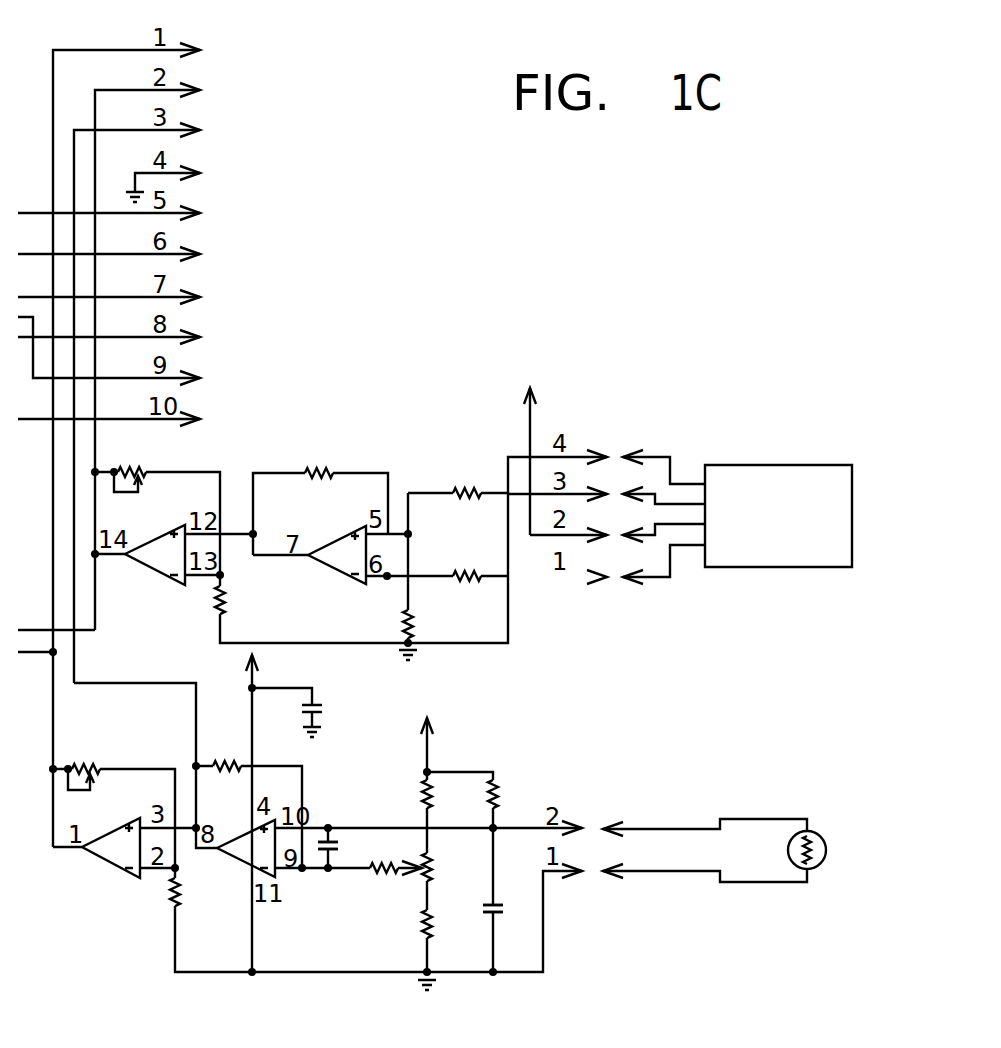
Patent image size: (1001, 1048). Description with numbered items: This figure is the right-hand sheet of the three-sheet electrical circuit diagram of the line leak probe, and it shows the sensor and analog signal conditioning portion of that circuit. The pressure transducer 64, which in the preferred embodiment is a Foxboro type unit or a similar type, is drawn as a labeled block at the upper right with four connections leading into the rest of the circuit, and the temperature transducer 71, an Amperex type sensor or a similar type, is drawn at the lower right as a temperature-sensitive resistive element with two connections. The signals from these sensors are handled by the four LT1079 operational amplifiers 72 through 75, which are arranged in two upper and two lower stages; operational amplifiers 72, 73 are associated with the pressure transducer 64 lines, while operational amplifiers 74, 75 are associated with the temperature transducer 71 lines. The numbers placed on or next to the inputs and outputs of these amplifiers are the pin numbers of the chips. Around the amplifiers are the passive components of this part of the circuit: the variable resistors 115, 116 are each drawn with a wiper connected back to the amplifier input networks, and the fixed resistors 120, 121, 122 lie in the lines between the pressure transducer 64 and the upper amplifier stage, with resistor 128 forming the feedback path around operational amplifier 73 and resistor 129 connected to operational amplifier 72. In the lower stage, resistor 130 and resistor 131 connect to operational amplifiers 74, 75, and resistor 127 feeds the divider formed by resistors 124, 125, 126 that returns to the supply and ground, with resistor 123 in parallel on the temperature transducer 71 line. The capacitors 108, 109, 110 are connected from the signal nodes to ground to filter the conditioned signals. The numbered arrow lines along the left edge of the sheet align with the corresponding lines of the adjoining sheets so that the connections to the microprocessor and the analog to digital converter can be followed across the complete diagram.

The pressure transducer 64 is at (788, 473).
The temperature transducer 71 is at (820, 830).
The operational amplifier 72 is at (152, 557).
The operational amplifier 73 is at (336, 563).
The operational amplifier 74 is at (107, 850).
The operational amplifier 75 is at (243, 855).
The capacitor 108 is at (334, 838).
The capacitor 109 is at (320, 700).
The capacitor 110 is at (497, 917).
The variable resistor 115 is at (135, 466).
The variable resistor 116 is at (85, 764).
The resistor 120 is at (457, 480).
The resistor 121 is at (460, 568).
The resistor 122 is at (413, 627).
The resistor 123 is at (503, 788).
The resistor 124 is at (421, 785).
The resistor 125 is at (432, 873).
The resistor 126 is at (420, 917).
The resistor 127 is at (380, 880).
The resistor 128 is at (317, 468).
The resistor 129 is at (228, 600).
The resistor 130 is at (224, 752).
The resistor 131 is at (172, 892).